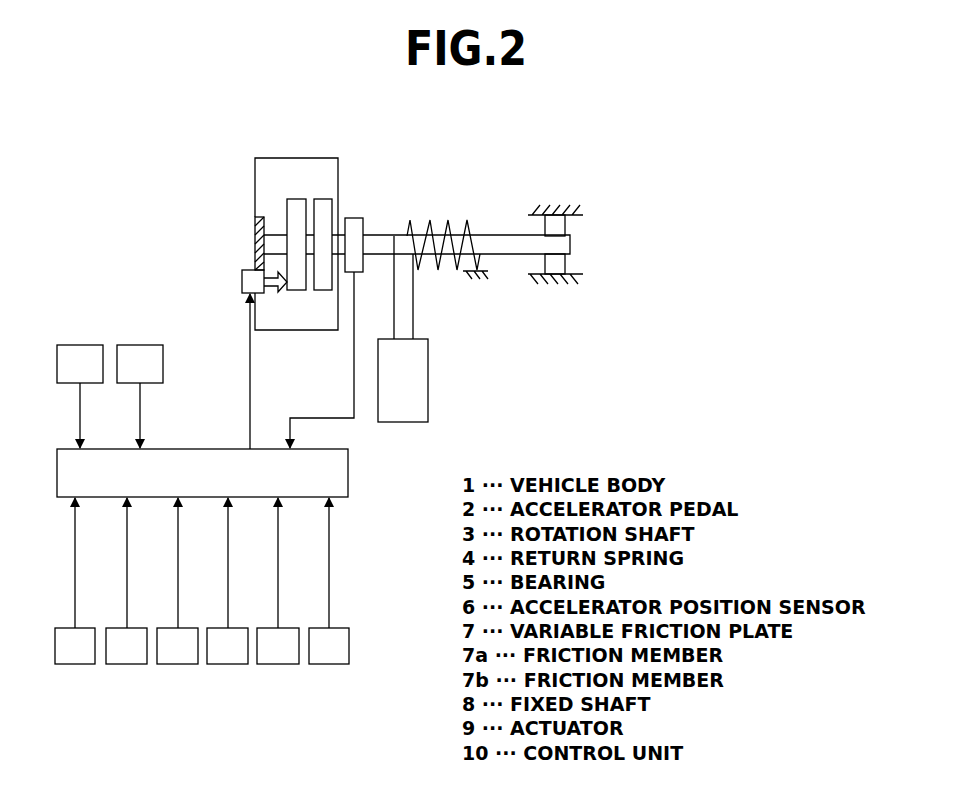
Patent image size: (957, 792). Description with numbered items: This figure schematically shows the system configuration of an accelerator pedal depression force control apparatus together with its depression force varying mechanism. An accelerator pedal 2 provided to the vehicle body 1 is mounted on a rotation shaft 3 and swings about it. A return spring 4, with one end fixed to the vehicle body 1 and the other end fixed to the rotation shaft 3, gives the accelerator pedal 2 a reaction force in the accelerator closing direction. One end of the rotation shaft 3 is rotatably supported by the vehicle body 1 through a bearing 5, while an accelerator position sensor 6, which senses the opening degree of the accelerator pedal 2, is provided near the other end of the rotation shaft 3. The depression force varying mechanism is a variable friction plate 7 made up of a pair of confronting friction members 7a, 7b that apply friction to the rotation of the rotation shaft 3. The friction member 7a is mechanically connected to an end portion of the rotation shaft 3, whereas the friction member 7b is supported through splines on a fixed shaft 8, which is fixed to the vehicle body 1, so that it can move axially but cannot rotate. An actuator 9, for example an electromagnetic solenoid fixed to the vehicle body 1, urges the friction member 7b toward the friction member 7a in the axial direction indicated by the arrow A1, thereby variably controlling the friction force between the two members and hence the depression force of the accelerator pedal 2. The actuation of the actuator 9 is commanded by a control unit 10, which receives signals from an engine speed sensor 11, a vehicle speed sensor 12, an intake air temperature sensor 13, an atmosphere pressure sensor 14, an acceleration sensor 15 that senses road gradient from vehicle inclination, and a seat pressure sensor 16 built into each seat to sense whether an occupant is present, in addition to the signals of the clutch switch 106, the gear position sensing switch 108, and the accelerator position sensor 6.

The vehicle body 1 is at (258, 237).
The accelerator pedal 2 is at (422, 328).
The rotation shaft 3 is at (500, 236).
The return spring 4 is at (433, 220).
The bearing 5 is at (560, 265).
The accelerator position sensor 6 is at (355, 230).
The variable friction plate 7 is at (318, 340).
The friction member 7a is at (323, 199).
The friction member 7b is at (297, 199).
The fixed shaft 8 is at (277, 241).
The actuator 9 is at (242, 282).
The control unit 10 is at (348, 473).
The arrow A1 is at (268, 294).
The engine speed sensor 11 is at (75, 581).
The vehicle speed sensor 12 is at (126, 581).
The intake air temperature sensor 13 is at (177, 581).
The atmosphere pressure sensor 14 is at (227, 581).
The acceleration sensor 15 is at (278, 581).
The seat pressure sensor 16 is at (329, 581).
The clutch switch 106 is at (80, 396).
The gear position sensing switch 108 is at (140, 396).